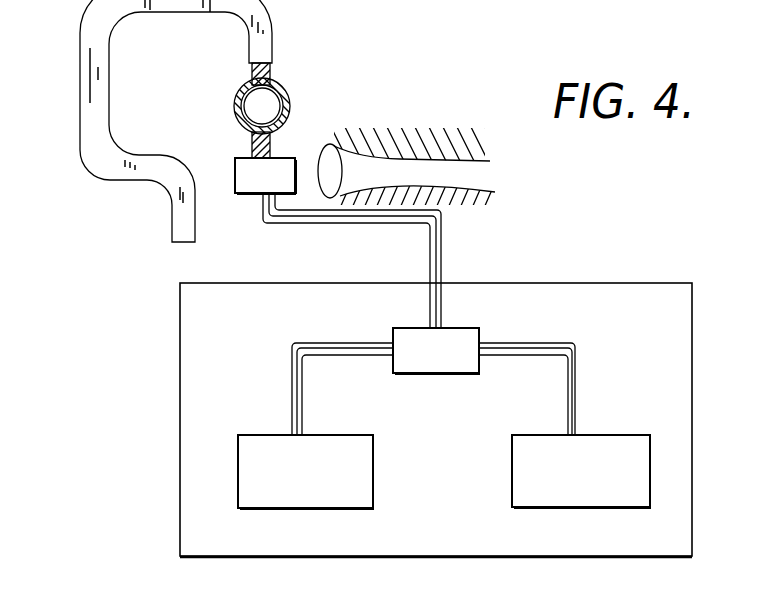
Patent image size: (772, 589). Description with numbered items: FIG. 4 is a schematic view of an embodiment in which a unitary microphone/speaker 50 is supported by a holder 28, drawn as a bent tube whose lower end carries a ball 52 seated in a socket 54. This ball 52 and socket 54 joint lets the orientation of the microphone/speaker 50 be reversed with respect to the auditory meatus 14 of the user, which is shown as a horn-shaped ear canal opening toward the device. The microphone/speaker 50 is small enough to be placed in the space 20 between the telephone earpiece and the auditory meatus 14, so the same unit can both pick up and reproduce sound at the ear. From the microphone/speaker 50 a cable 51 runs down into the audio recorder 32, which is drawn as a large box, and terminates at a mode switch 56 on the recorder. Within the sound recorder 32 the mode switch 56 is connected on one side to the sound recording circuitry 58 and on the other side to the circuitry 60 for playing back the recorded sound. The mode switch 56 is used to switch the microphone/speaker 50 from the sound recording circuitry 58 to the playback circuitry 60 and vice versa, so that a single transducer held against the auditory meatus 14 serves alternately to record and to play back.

The auditory meatus 14 is at (484, 159).
The space 20 is at (308, 151).
The holder 28 is at (90, 50).
The audio recorder 32 is at (683, 338).
The microphone/speaker 50 is at (236, 194).
The cable 51 is at (436, 257).
The ball 52 is at (251, 90).
The socket 54 is at (240, 125).
The mode switch 56 is at (474, 332).
The sound recording circuitry 58 is at (248, 444).
The playback circuitry 60 is at (635, 445).